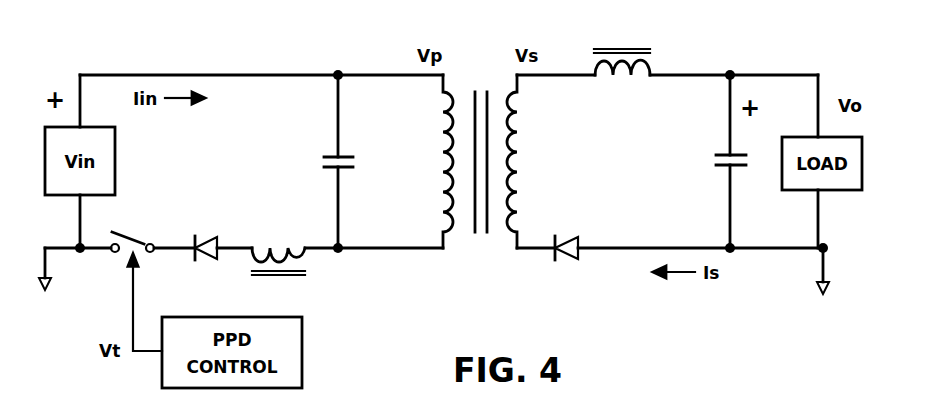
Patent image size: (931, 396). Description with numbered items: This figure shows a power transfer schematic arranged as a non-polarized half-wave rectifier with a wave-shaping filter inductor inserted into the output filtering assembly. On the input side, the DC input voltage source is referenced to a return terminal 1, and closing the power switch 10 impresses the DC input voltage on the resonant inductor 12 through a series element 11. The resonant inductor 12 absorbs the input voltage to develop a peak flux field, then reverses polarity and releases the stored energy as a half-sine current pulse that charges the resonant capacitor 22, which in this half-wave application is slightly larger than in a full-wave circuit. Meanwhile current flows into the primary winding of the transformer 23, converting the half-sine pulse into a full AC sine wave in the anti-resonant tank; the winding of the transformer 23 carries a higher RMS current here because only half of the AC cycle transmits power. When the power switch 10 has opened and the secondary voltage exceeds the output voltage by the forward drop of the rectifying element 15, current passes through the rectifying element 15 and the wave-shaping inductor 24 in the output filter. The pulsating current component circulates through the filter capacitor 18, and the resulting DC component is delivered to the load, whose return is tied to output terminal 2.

The input ground terminal 1 is at (58, 275).
The output ground terminal 2 is at (836, 278).
The power switch 10 is at (136, 280).
The diode 11 is at (207, 234).
The resonant inductor 12 is at (278, 242).
The rectifying element 15 is at (565, 233).
The filter capacitor 18 is at (742, 161).
The resonant capacitor 22 is at (353, 161).
The transformer 23 is at (480, 178).
The output inductor 24 is at (622, 80).